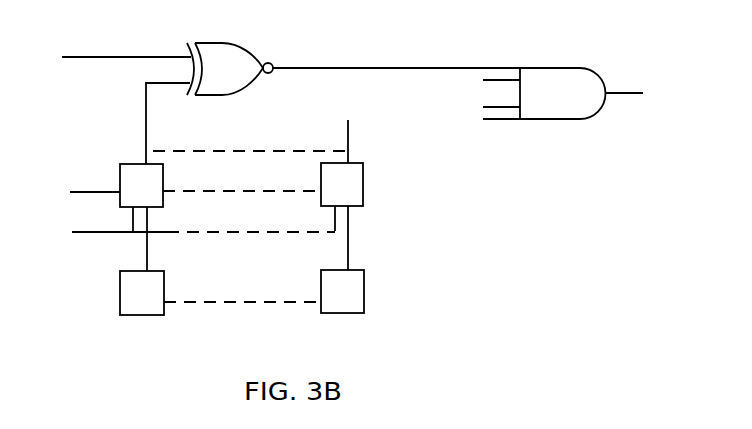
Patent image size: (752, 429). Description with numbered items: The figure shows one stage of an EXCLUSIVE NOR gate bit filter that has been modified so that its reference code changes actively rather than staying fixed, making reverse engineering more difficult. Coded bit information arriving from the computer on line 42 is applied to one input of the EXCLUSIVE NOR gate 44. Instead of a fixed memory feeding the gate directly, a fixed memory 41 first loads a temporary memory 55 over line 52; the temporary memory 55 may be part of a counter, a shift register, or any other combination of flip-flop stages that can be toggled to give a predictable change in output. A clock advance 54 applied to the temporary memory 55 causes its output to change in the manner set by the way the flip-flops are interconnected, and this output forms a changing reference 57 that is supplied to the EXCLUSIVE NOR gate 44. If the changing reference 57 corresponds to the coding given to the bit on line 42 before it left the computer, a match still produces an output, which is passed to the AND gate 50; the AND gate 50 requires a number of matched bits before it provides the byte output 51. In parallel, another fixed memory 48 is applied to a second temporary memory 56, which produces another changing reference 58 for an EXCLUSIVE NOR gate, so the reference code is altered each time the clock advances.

The fixed memory 41 is at (137, 317).
The line 42 is at (132, 56).
The EXCLUSIVE NOR gate 44 is at (221, 43).
The fixed memory 48 is at (365, 308).
The AND gate 50 is at (558, 68).
The byte output 51 is at (622, 94).
The line 52 is at (95, 235).
The clock advance 54 is at (84, 192).
The temporary memory 55 is at (120, 163).
The temporary memory 56 is at (365, 196).
The changing reference 57 is at (146, 107).
The changing reference 58 is at (349, 133).